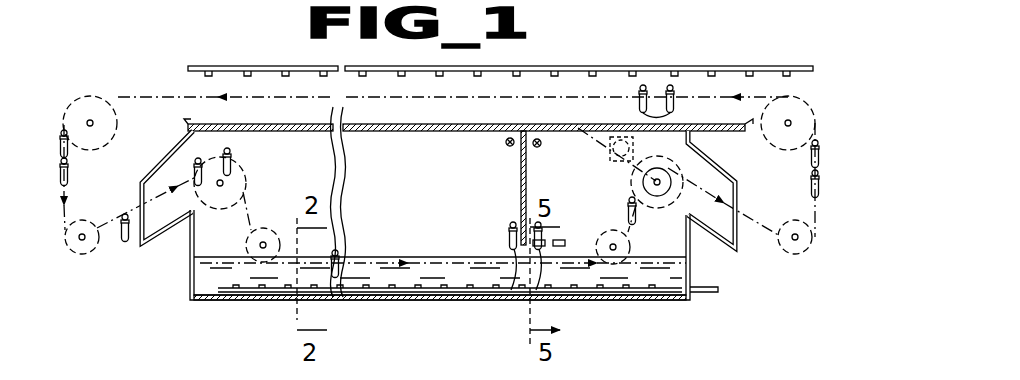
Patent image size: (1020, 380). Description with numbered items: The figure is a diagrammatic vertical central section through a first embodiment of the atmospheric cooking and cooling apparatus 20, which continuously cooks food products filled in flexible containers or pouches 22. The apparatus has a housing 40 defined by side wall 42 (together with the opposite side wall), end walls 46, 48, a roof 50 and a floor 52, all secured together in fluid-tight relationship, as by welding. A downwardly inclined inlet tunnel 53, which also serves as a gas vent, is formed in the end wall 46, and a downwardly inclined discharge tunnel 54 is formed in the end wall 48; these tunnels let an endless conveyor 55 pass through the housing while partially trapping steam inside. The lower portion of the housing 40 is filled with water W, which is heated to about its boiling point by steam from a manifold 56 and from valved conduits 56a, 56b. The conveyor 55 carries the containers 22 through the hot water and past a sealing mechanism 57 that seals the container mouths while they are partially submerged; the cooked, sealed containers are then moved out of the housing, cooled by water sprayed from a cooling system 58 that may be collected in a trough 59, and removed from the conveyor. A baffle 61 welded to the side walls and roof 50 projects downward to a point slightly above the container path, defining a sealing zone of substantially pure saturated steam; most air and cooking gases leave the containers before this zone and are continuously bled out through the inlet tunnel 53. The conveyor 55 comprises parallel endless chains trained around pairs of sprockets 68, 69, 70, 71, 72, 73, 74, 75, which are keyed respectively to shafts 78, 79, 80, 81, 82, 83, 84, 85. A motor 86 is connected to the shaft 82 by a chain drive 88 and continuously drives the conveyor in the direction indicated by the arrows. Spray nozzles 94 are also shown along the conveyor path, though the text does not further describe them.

The atmospheric cooking and cooling apparatus 20 is at (700, 44).
The flexible containers or pouches 22 is at (64, 128).
The housing 40 is at (186, 283).
The side wall 42 is at (403, 171).
The end wall 46 is at (190, 262).
The end wall 48 is at (692, 264).
The roof 50 is at (470, 128).
The floor 52 is at (447, 295).
The inlet tunnel 53 is at (160, 173).
The discharge tunnel 54 is at (737, 184).
The endless conveyor 55 is at (536, 96).
The manifold 56 is at (380, 292).
The valved conduit 56a is at (506, 142).
The valved conduit 56b is at (565, 156).
The sealing mechanism 57 is at (565, 240).
The cooling system 58 is at (250, 57).
The trough 59 is at (293, 128).
The baffle 61 is at (519, 175).
The sprocket 68 is at (104, 214).
The sprocket 69 is at (241, 212).
The sprocket 70 is at (250, 236).
The sprocket 71 is at (640, 228).
The sprocket 72 is at (690, 176).
The sprocket 73 is at (786, 224).
The sprocket 74 is at (800, 150).
The sprocket 75 is at (118, 116).
The shaft 78 is at (79, 238).
The shaft 79 is at (223, 184).
The shaft 80 is at (260, 245).
The shaft 81 is at (616, 247).
The shaft 82 is at (655, 183).
The shaft 83 is at (797, 241).
The shaft 84 is at (791, 122).
The shaft 85 is at (90, 120).
The motor 86 is at (592, 130).
The chain drive 88 is at (634, 152).
The spray nozzles 94 is at (126, 242).
The water W is at (454, 262).